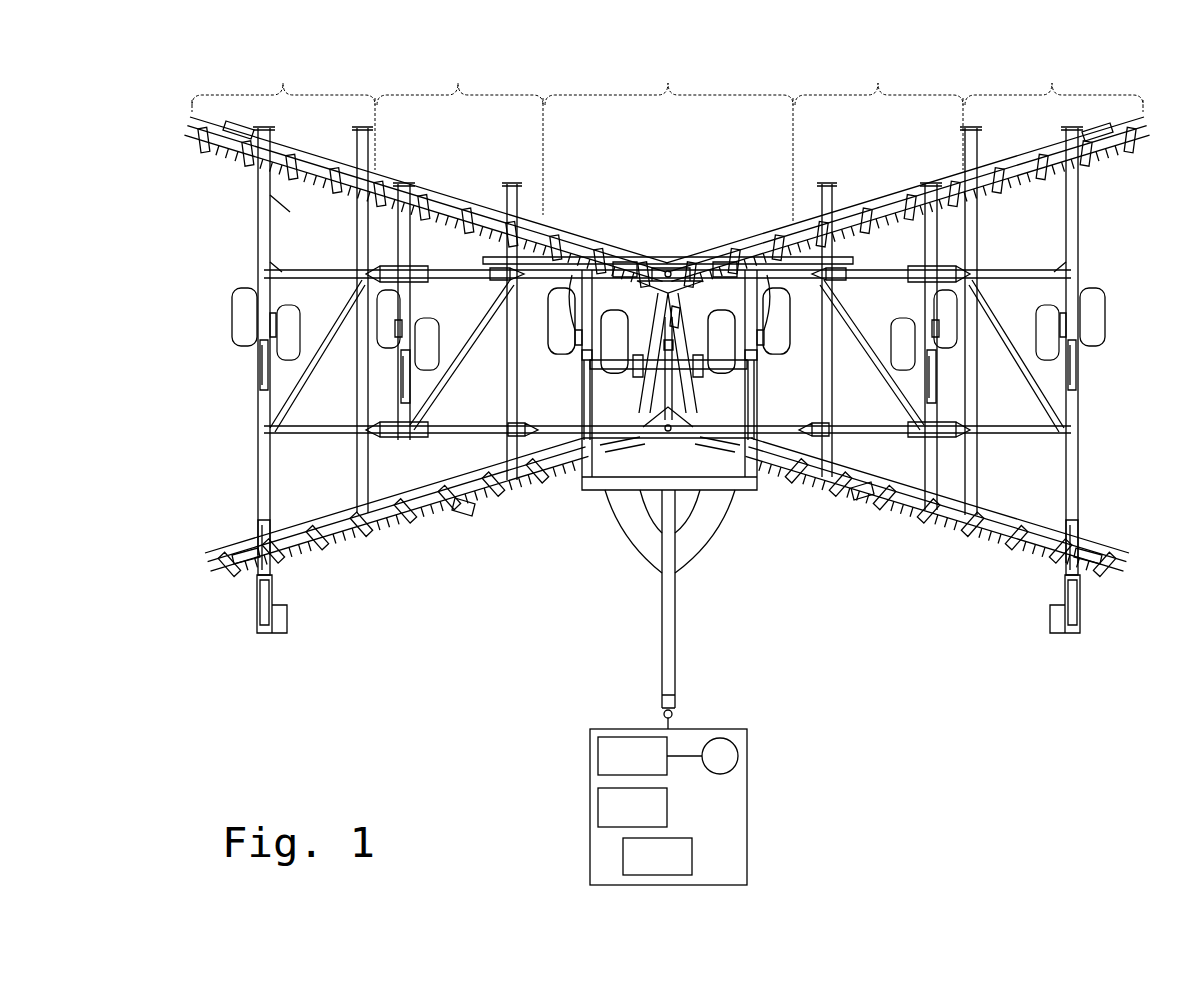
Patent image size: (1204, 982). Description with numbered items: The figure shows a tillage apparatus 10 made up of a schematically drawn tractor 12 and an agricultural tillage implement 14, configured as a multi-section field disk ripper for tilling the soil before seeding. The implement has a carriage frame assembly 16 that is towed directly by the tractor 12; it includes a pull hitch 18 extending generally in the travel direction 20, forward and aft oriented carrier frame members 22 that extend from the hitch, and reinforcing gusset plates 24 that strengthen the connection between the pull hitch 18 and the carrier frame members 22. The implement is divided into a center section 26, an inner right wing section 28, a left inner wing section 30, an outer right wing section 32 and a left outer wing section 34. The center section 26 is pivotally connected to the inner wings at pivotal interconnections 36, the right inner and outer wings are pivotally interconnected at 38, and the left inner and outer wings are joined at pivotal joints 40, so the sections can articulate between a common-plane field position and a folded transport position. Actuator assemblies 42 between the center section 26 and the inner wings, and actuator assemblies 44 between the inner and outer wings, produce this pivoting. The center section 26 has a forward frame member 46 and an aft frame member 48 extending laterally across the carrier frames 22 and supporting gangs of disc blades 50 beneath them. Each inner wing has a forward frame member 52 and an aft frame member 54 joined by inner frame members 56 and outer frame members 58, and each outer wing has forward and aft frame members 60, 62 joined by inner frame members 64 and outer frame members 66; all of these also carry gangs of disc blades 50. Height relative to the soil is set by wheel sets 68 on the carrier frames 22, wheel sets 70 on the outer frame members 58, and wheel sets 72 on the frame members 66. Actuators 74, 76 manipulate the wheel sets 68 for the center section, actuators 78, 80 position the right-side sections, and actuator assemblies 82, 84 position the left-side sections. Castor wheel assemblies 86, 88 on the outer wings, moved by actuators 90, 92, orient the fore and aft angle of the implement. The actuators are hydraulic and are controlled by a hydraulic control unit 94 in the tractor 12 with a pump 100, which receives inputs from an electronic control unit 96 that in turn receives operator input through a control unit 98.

The tillage apparatus 10 is at (945, 728).
The tractor 12 is at (747, 795).
The agricultural tillage implement 14 is at (850, 540).
The carriage frame assembly 16 is at (750, 495).
The pull hitch 18 is at (672, 645).
The travel direction 20 is at (597, 680).
The carrier frame members 22 is at (580, 492).
The reinforcing gusset plates 24 is at (640, 520).
The center section 26 is at (669, 133).
The inner right wing section 28 is at (879, 107).
The left inner wing section 30 is at (460, 129).
The outer right wing section 32 is at (1054, 78).
The left outer wing section 34 is at (283, 107).
The pivotal interconnections 36 is at (548, 225).
The pivotal interconnection 38 is at (962, 178).
The pivotal joints 40 is at (373, 172).
The actuator assemblies 42 is at (615, 255).
The actuator assemblies 44 is at (450, 270).
The forward frame member 46 is at (618, 450).
The aft frame member 48 is at (645, 260).
The gangs of disc blades 50 is at (297, 147).
The forward frame member 52 is at (460, 510).
The aft frame member 54 is at (437, 200).
The inner frame members 56 is at (508, 367).
The outer frame members 58 is at (410, 300).
The forward frame member 60 is at (245, 570).
The aft frame member 62 is at (240, 127).
The inner frame members 64 is at (360, 472).
The outer frame members 66 is at (262, 465).
The wheel sets 68 is at (553, 358).
The wheel sets 70 is at (432, 382).
The wheel sets 72 is at (250, 343).
The actuator 74 is at (590, 400).
The actuator 76 is at (746, 400).
The actuator 78 is at (930, 392).
The actuator 80 is at (1080, 380).
The actuator assembly 82 is at (402, 390).
The actuator assembly 84 is at (262, 385).
The castor wheel assembly 86 is at (1085, 625).
The castor wheel assembly 88 is at (258, 620).
The actuator 90 is at (1085, 520).
The actuator 92 is at (240, 537).
The hydraulic control unit 94 is at (598, 745).
The electronic control unit 96 is at (598, 805).
The control unit 98 is at (690, 855).
The pump 100 is at (738, 757).